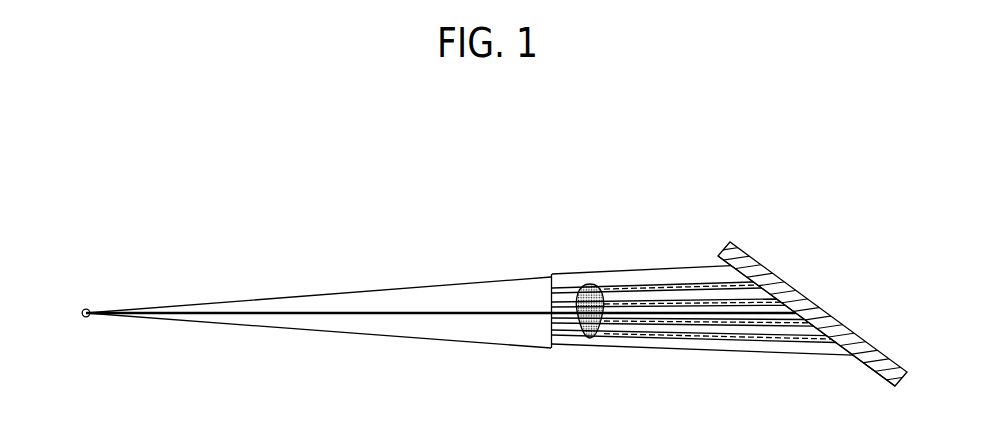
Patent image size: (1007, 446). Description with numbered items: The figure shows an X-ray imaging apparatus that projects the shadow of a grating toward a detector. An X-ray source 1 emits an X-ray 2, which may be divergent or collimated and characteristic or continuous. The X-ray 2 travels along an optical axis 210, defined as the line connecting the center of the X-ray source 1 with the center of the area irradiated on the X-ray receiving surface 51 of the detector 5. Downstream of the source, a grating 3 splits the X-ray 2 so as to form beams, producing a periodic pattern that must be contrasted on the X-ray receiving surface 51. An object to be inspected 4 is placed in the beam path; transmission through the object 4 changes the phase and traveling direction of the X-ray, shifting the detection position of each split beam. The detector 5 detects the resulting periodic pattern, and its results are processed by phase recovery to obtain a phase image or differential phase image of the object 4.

The X-ray source 1 is at (86, 308).
The X-ray 2 is at (353, 292).
The optical axis 210 is at (461, 312).
The grating 3 is at (551, 273).
The object to be inspected 4 is at (590, 284).
The detector 5 is at (727, 243).
The X-ray receiving surface 51 is at (718, 257).